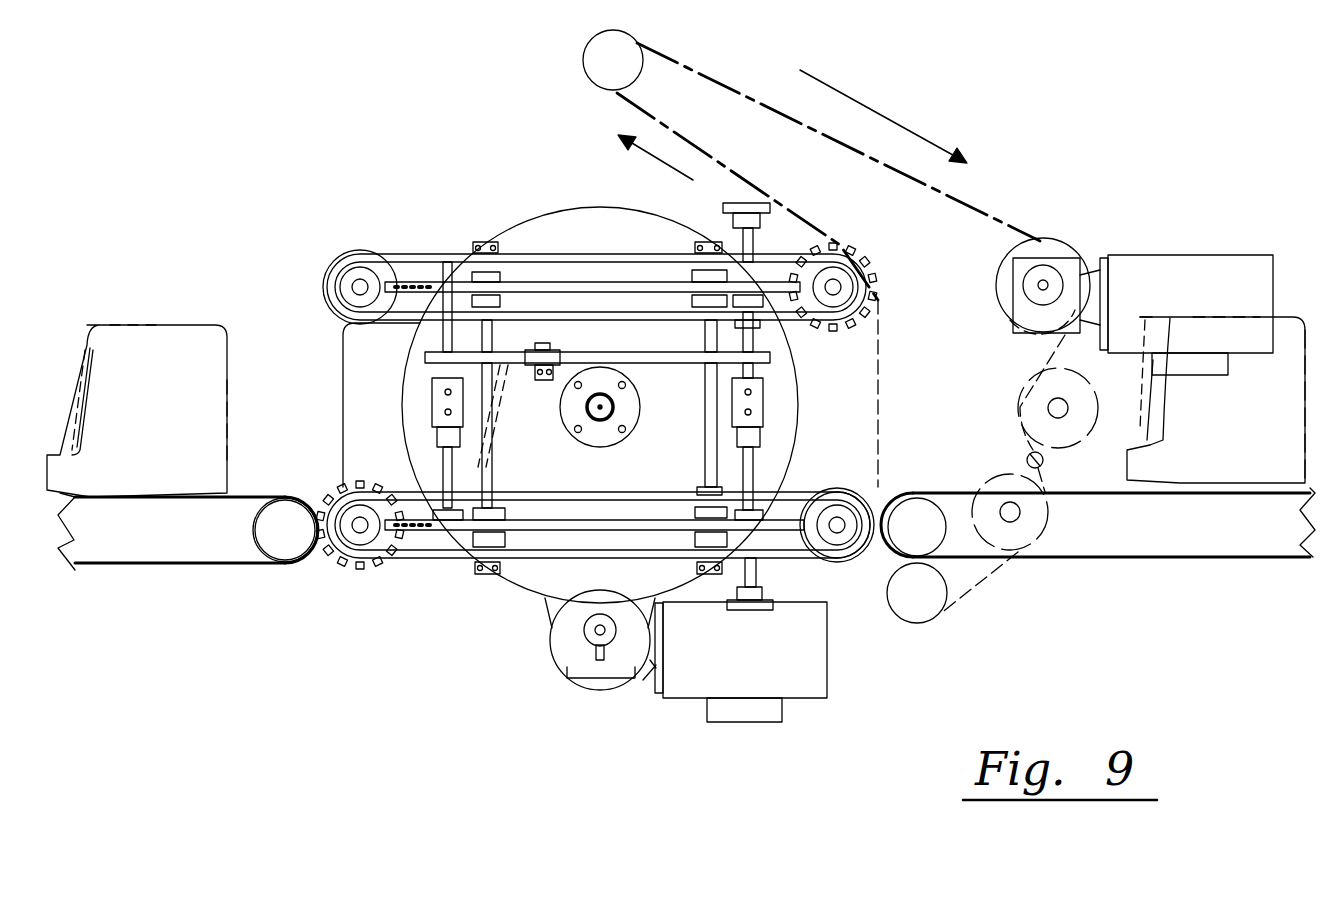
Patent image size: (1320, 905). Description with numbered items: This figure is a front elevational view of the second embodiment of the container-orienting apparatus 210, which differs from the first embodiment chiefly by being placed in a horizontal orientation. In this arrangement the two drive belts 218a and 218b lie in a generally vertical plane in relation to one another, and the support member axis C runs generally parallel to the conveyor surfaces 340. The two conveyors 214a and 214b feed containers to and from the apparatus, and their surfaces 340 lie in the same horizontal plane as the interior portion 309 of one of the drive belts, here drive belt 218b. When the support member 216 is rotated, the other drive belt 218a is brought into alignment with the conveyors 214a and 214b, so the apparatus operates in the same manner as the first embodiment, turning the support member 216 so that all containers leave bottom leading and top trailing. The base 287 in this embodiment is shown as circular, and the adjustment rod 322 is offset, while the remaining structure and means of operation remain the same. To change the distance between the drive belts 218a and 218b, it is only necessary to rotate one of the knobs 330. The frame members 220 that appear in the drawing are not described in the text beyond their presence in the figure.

The apparatus 210 is at (478, 210).
The support member 216 is at (566, 199).
The drive belt 218a is at (650, 242).
The drive belt 218b is at (440, 565).
The frame 220 is at (343, 362).
The knob 330 is at (774, 192).
The adjustment rod 322 is at (745, 480).
The interior portion 309 is at (790, 490).
The conveyor surface 340 is at (250, 495).
The conveyor 214a is at (255, 565).
The conveyor 214b is at (1085, 560).
The base 287 is at (515, 590).
The support member axis C is at (600, 407).